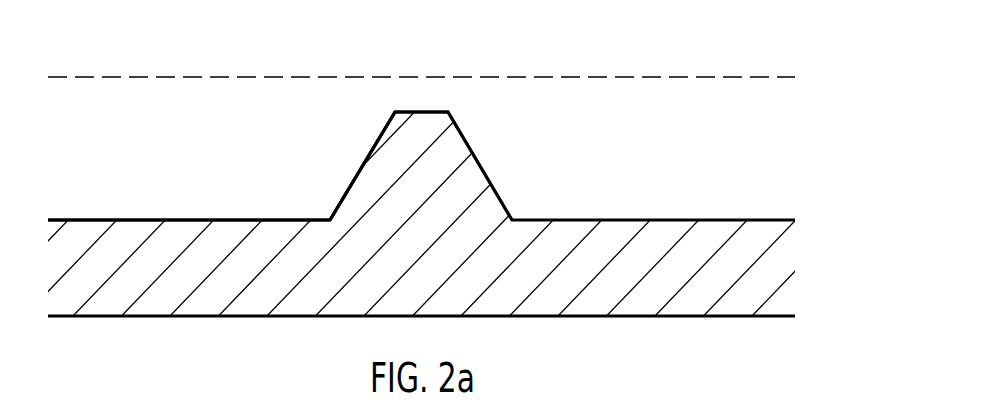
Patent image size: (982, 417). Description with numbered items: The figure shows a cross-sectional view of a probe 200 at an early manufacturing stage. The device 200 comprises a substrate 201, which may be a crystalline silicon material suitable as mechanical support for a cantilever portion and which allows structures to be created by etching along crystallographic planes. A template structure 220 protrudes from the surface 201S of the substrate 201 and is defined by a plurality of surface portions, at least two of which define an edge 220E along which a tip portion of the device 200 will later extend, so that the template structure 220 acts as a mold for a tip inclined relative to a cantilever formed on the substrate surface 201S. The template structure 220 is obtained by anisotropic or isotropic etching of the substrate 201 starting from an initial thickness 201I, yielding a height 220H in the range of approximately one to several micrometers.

The probe 200 is at (812, 55).
The substrate 201 is at (778, 288).
The surface of the substrate 201S is at (187, 218).
The initial thickness 201I is at (62, 78).
The template structure 220 is at (456, 99).
The edge 220E is at (360, 163).
The height 220H is at (547, 112).